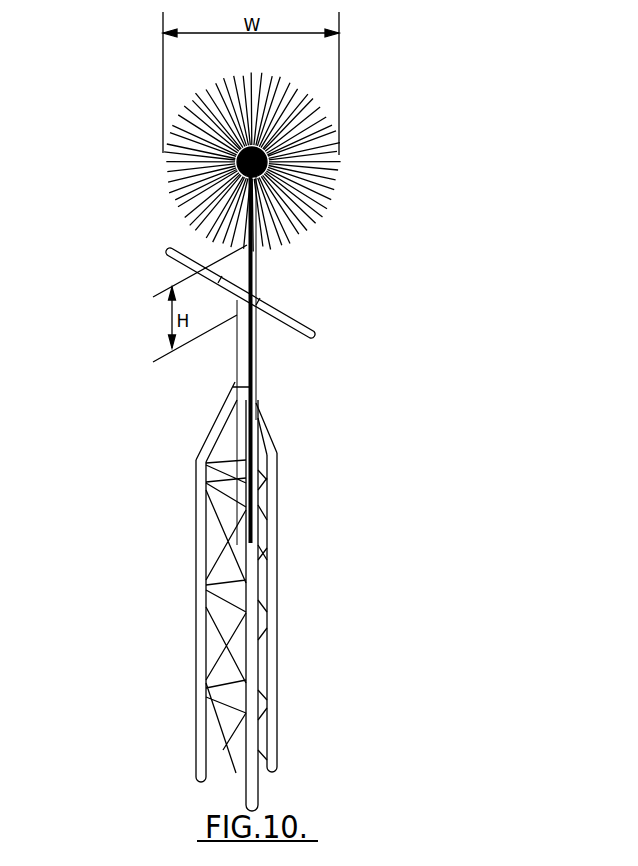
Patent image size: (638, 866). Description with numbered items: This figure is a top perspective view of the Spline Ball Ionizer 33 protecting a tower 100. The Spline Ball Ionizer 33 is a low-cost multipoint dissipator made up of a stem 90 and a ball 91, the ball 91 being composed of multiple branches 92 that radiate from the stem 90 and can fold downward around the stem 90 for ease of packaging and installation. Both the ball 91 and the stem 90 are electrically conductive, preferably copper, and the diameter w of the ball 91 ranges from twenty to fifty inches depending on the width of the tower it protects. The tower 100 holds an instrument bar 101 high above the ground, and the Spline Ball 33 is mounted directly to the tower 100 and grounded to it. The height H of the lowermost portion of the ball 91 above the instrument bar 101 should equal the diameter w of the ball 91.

The Spline Ball Ionizer 33 is at (387, 233).
The stem 90 is at (258, 278).
The ball 91 is at (207, 150).
The branches 92 is at (333, 197).
The tower 100 is at (268, 622).
The instrument bar 101 is at (312, 338).